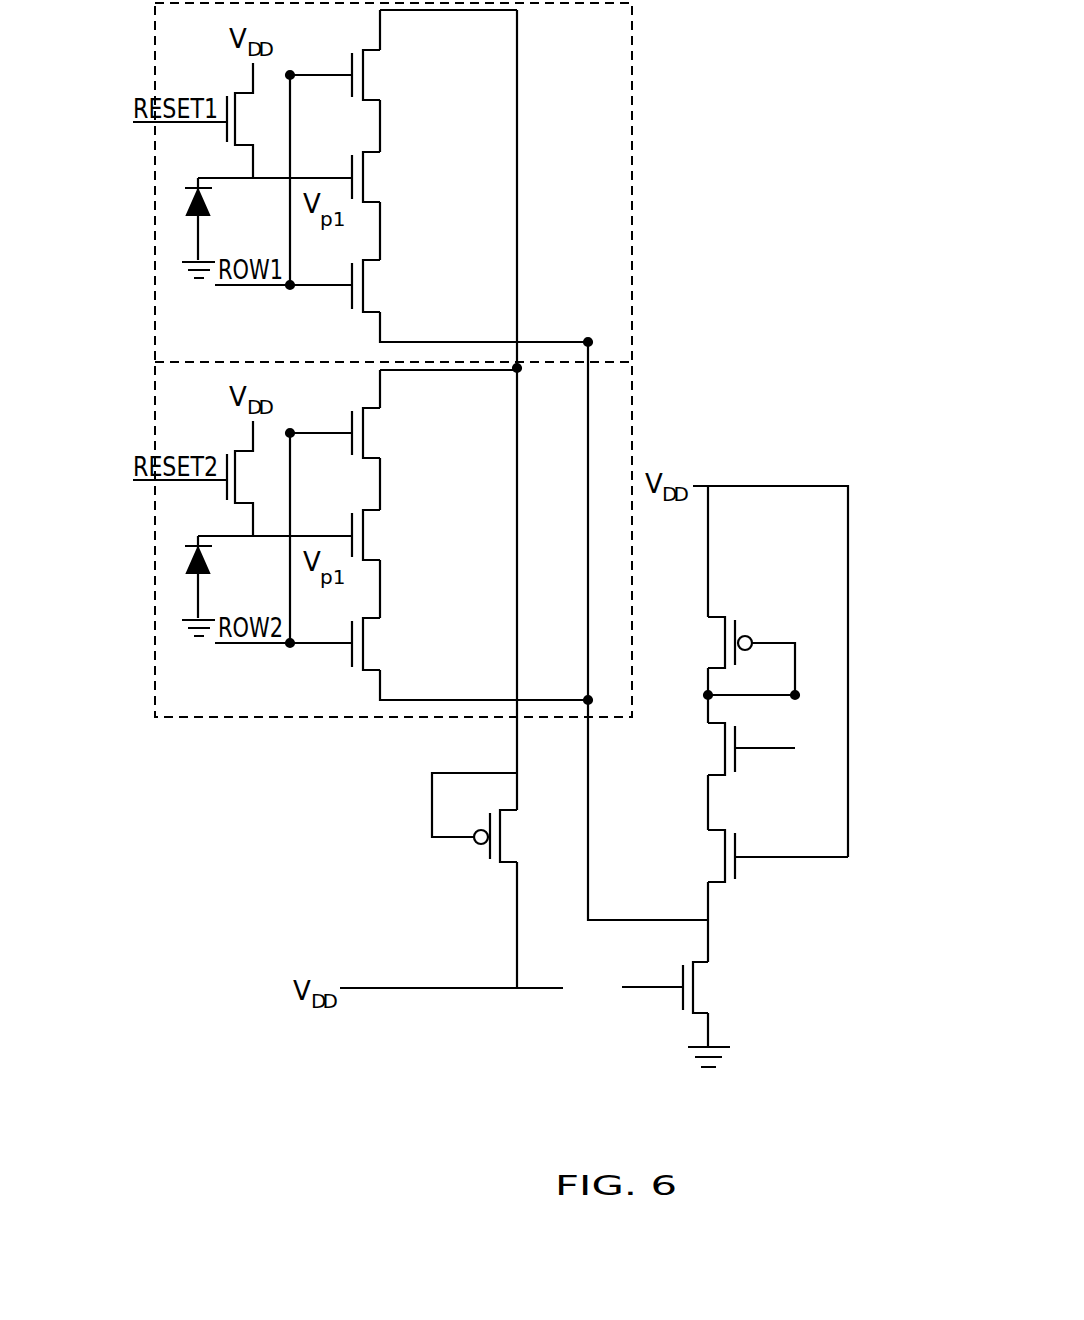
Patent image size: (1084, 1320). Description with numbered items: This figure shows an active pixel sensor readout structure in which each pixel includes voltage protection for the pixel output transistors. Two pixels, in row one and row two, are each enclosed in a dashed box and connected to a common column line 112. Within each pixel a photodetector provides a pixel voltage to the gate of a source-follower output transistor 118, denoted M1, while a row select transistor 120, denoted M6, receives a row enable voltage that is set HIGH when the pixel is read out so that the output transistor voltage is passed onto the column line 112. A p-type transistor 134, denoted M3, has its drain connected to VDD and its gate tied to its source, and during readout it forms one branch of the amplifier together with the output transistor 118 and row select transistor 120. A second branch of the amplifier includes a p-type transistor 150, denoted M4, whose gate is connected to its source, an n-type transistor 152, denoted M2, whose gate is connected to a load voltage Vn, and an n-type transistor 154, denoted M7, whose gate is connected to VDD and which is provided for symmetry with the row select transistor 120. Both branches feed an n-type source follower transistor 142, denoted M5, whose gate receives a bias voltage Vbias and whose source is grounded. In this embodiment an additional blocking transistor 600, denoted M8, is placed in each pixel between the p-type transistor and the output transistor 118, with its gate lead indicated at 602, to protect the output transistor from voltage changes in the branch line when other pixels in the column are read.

The column line 112 is at (588, 400).
The source-follower output transistor 118 is at (408, 198).
The row select transistor 120 is at (408, 298).
The p-type transistor 134 is at (553, 846).
The n-type source follower transistor 142 is at (738, 1000).
The p-type transistor 150 is at (673, 655).
The n-type transistor 152 is at (686, 770).
The n-type transistor 154 is at (686, 870).
The blocking transistor 600 is at (408, 100).
The gate of reset transistor M8 602 is at (352, 50).